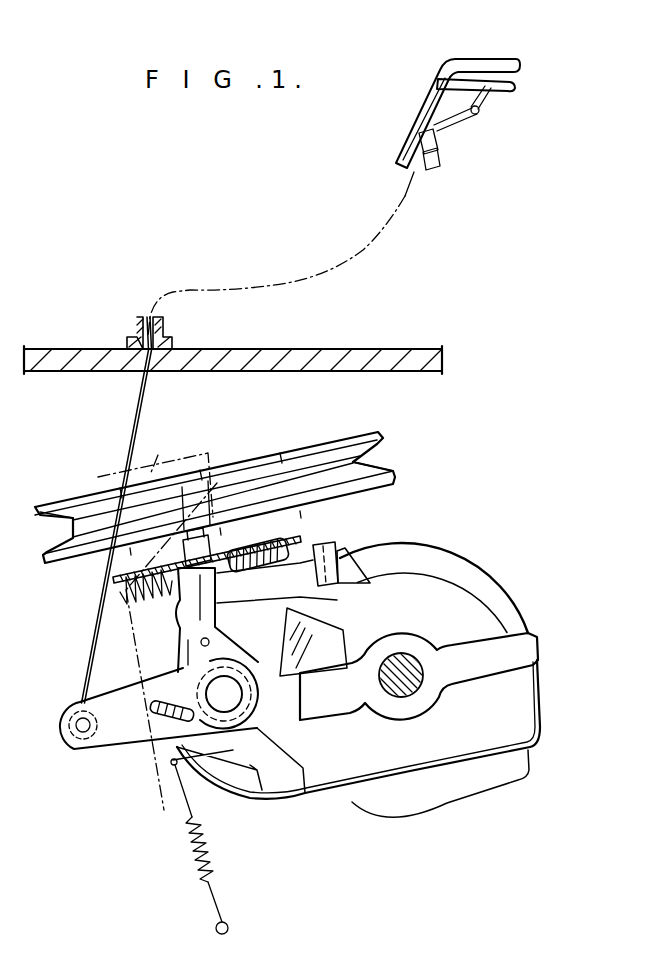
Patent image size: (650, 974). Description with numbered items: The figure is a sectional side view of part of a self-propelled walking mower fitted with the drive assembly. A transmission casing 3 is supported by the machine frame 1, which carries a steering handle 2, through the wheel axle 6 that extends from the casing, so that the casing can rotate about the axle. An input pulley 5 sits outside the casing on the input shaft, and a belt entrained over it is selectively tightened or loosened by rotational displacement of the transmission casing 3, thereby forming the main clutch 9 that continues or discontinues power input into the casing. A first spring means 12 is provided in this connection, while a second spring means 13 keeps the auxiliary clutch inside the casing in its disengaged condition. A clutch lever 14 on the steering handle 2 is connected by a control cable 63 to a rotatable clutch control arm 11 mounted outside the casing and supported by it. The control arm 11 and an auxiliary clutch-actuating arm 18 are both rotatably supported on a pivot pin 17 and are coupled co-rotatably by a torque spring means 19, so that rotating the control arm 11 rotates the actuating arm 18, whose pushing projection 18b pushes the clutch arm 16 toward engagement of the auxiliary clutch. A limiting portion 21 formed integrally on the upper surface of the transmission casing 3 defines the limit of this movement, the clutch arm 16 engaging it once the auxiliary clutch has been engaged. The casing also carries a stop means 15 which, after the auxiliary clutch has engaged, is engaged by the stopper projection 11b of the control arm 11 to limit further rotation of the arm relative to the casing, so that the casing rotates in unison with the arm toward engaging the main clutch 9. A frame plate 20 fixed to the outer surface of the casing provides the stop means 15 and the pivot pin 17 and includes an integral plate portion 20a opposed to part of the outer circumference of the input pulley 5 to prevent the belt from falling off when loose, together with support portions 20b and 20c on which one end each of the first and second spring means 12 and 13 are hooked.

The machine frame 1 is at (408, 355).
The steering handle 2 is at (498, 62).
The transmission casing 3 is at (340, 772).
The input pulley 5 is at (385, 432).
The wheel axle 6 is at (407, 683).
The main clutch 9 is at (372, 498).
The clutch control arm 11 is at (108, 730).
The stopper projection 11b is at (303, 788).
The first spring means 12 is at (190, 835).
The second spring means 13 is at (217, 483).
The clutch lever 14 is at (505, 88).
The stop means 15 is at (257, 772).
The clutch arm 16 is at (335, 598).
The pivot pin 17 is at (232, 692).
The auxiliary clutch-actuating arm 18 is at (178, 620).
The pushing projection 18b is at (252, 553).
The torque spring means 19 is at (150, 757).
The frame plate 20 is at (337, 621).
The integral plate portion 20a is at (158, 455).
The support portion 20b is at (167, 802).
The support portion 20c is at (108, 602).
The limiting portion 21 is at (345, 516).
The control cable 63 is at (140, 408).